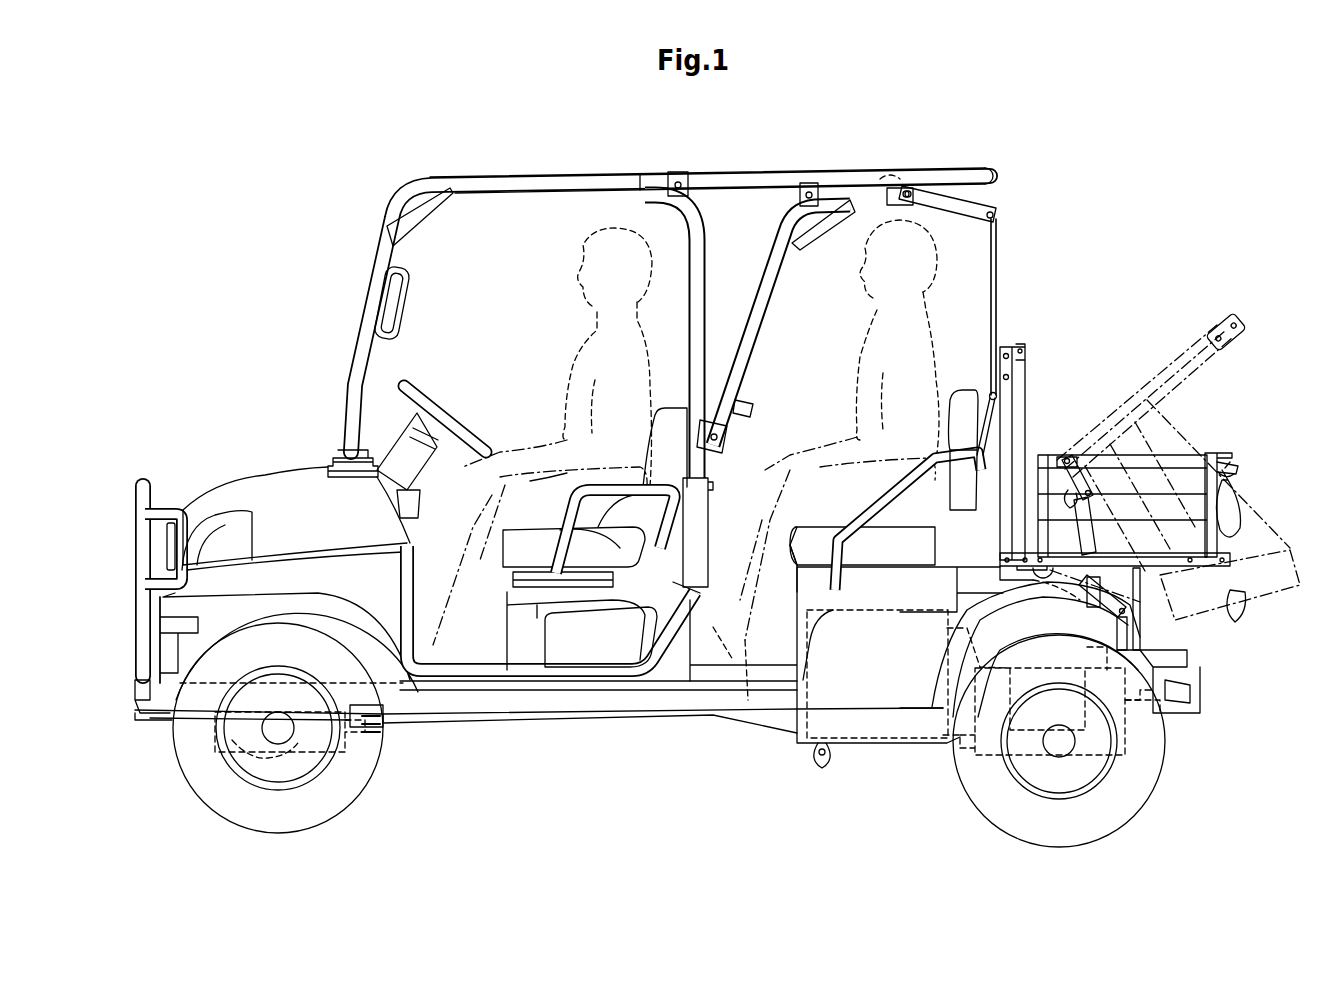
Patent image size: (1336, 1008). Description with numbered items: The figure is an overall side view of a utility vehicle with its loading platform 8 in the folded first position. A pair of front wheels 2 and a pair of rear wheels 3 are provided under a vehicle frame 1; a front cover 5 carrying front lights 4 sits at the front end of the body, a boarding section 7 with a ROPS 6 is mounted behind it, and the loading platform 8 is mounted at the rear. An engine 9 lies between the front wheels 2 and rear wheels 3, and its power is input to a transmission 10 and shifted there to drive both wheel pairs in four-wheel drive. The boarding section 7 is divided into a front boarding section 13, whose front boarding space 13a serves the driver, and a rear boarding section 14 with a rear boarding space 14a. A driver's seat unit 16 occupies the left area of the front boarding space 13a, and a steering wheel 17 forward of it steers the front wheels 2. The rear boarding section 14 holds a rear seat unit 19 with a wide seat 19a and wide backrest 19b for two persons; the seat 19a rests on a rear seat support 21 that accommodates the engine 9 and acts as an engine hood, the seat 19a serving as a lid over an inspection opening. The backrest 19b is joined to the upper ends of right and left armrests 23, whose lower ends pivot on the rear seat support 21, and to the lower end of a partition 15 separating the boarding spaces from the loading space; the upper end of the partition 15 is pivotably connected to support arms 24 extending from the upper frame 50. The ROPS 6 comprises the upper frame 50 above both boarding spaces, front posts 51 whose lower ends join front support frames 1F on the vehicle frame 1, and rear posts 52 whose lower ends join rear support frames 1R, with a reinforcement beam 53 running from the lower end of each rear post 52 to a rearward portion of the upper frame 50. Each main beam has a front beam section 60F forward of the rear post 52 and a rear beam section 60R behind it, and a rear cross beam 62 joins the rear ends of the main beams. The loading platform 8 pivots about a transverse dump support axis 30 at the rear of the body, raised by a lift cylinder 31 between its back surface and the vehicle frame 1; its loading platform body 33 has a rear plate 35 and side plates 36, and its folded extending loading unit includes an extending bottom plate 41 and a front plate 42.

The vehicle frame 1 is at (527, 700).
The front support frame 1F is at (428, 633).
The rear support frame 1R is at (668, 635).
The front wheel 2 is at (207, 798).
The rear wheel 3 is at (983, 806).
The front light 4 is at (232, 530).
The front cover 5 is at (260, 487).
The ROPS 6 is at (678, 426).
The boarding section 7 is at (678, 426).
The loading platform 8 is at (1150, 467).
The engine 9 is at (797, 636).
The transmission 10 is at (980, 770).
The front boarding section 13 is at (636, 326).
The front boarding space 13a is at (547, 397).
The rear boarding section 14 is at (986, 293).
The rear boarding space 14a is at (837, 397).
The partition 15 is at (998, 294).
The driver's seat unit 16 is at (548, 545).
The steering wheel 17 is at (435, 398).
The rear seat unit 19 is at (793, 555).
The seat 19a is at (797, 548).
The backrest 19b is at (964, 400).
The rear seat support 21 is at (866, 695).
The armrest 23 is at (880, 500).
The support arm 24 is at (962, 209).
The dump support axis 30 is at (1105, 598).
The lift cylinder 31 is at (1070, 590).
The loading platform body 33 is at (1150, 467).
The rear plate 35 is at (1226, 530).
The side plate 36 is at (1052, 472).
The extending bottom plate 41 is at (1002, 498).
The front plate 42 is at (1026, 388).
The upper frame 50 is at (731, 155).
The front post 51 is at (350, 356).
The rear post 52 is at (705, 249).
The reinforcement beam 53 is at (773, 300).
The front beam section 60F is at (565, 152).
The rear beam section 60R is at (807, 181).
The rear cross beam 62 is at (998, 172).